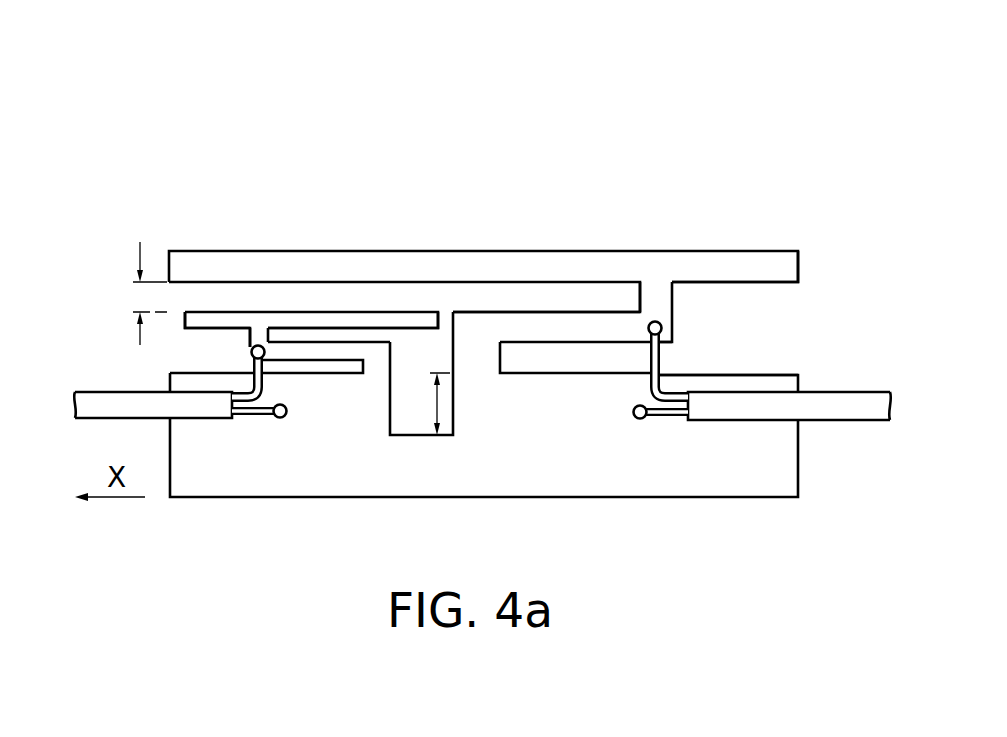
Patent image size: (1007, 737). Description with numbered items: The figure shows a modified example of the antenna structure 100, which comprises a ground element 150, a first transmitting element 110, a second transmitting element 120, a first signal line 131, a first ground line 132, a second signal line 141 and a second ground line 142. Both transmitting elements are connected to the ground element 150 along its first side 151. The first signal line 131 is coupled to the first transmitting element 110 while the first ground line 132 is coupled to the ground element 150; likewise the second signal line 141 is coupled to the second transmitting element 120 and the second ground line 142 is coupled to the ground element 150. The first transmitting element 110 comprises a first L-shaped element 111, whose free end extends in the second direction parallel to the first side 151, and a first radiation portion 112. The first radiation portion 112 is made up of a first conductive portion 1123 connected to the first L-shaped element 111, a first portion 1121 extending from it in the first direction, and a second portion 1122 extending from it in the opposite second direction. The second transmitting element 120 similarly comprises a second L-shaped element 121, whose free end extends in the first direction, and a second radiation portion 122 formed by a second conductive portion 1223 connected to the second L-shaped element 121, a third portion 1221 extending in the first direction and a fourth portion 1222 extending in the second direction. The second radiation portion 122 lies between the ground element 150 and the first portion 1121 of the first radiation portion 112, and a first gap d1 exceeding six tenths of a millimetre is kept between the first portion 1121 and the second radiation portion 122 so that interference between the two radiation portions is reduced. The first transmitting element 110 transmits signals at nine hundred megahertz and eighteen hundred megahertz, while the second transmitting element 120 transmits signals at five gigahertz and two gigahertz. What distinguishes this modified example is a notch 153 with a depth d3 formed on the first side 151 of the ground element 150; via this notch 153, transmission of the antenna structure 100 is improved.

The antenna structure 100 is at (162, 31).
The first transmitting element 110 is at (677, 102).
The first L-shaped element 111 is at (477, 327).
The first radiation portion 112 is at (777, 155).
The first portion 1121 is at (565, 265).
The first conductive portion 1123 is at (655, 297).
The second portion 1122 is at (750, 265).
The second transmitting element 120 is at (397, 102).
The second L-shaped element 121 is at (372, 335).
The second radiation portion 122 is at (360, 155).
The third portion 1221 is at (200, 318).
The second conductive portion 1223 is at (258, 332).
The fourth portion 1222 is at (325, 318).
The first signal line 131 is at (673, 358).
The first ground line 132 is at (668, 420).
The second signal line 141 is at (252, 366).
The second ground line 142 is at (252, 418).
The ground element 150 is at (482, 470).
The first side 151 is at (768, 372).
The notch 153 is at (398, 423).
The first gap d1 is at (135, 293).
The depth d3 is at (425, 404).